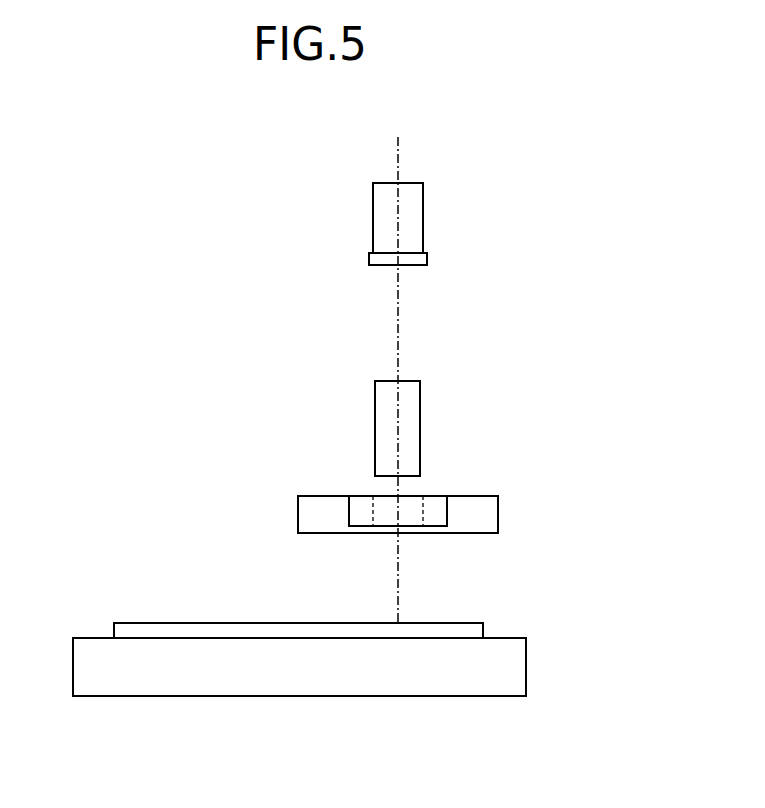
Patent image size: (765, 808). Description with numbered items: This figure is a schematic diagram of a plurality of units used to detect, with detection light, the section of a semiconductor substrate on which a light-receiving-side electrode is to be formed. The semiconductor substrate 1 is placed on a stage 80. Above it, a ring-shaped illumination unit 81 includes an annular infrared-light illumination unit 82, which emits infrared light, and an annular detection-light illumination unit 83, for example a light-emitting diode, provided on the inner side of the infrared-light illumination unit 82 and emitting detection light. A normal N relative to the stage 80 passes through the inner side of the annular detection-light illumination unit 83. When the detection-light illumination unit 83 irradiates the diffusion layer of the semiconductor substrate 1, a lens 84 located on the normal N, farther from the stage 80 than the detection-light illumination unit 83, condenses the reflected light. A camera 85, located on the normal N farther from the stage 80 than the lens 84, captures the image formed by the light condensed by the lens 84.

The normal N is at (398, 162).
The camera 85 is at (412, 216).
The lens 84 is at (412, 429).
The detection-light illumination unit 83 is at (433, 502).
The infrared-light illumination unit 82 is at (490, 513).
The ring-shaped illumination unit 81 is at (459, 498).
The semiconductor substrate 1 is at (432, 630).
The stage 80 is at (518, 663).